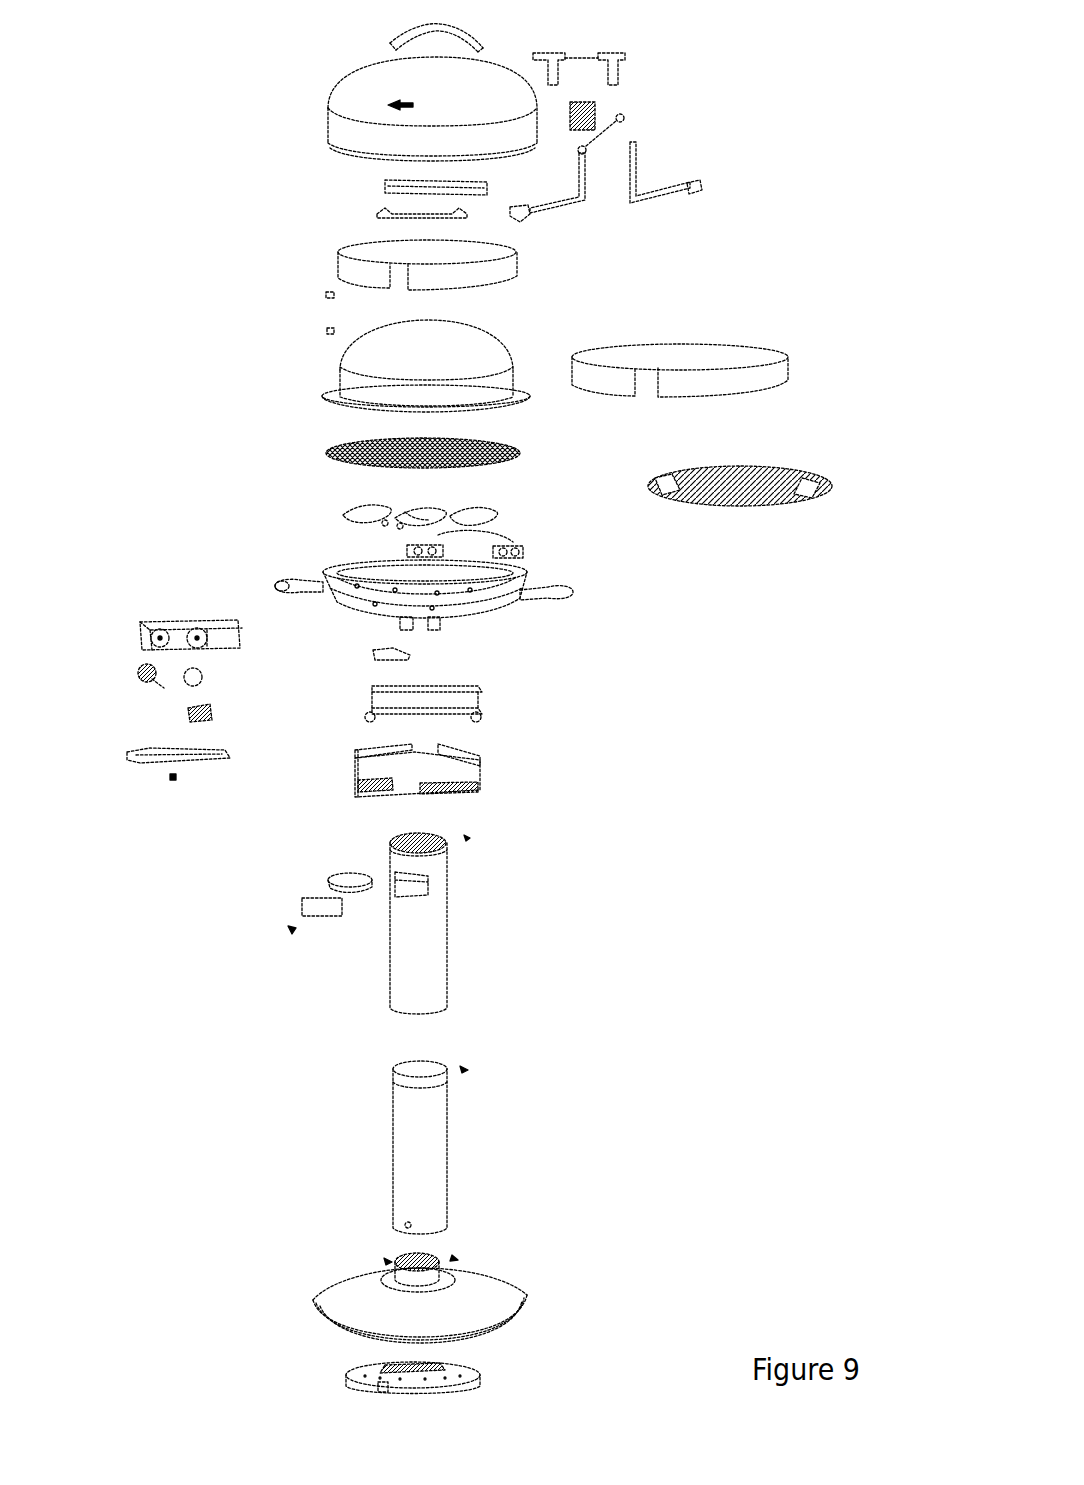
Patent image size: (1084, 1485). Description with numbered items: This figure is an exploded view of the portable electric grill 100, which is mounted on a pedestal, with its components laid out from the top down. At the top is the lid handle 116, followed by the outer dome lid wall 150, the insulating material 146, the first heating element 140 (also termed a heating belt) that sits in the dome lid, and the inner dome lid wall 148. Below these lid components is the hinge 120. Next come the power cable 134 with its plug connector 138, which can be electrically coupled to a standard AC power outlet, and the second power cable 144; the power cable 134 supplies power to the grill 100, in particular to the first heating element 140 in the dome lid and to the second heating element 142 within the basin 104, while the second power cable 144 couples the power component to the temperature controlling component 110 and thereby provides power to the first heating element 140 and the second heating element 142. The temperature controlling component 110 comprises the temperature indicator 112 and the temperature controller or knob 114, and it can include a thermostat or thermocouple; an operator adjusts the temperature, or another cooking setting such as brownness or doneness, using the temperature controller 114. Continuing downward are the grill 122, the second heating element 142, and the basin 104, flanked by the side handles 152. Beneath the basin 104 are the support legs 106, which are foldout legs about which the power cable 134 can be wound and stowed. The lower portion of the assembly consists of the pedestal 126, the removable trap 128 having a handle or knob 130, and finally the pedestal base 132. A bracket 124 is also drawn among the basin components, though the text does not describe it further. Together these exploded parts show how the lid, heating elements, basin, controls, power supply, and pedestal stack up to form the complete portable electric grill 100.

The portable electric grill 100 is at (230, 100).
The basin 104 is at (510, 607).
The support legs 106 is at (475, 757).
The temperature controlling component 110 is at (147, 628).
The temperature indicator 112 is at (142, 670).
The temperature controller 114 is at (202, 673).
The lid handle 116 is at (393, 42).
The hinge 120 is at (623, 63).
The grill 122 is at (353, 450).
The mounting bracket 124 is at (437, 628).
The pedestal 126 is at (443, 940).
The removable trap 128 is at (335, 882).
The handle or knob 130 is at (292, 928).
The pedestal base 132 is at (352, 1283).
The power cable 134 is at (657, 207).
The plug connector 138 is at (697, 187).
The first heating element 140 is at (343, 262).
The second heating element 142 is at (350, 517).
The second power cable 144 is at (548, 210).
The insulating material 146 is at (730, 350).
The inner dome lid wall 148 is at (345, 372).
The outer dome lid wall 150 is at (332, 128).
The side handles 152 is at (293, 580).